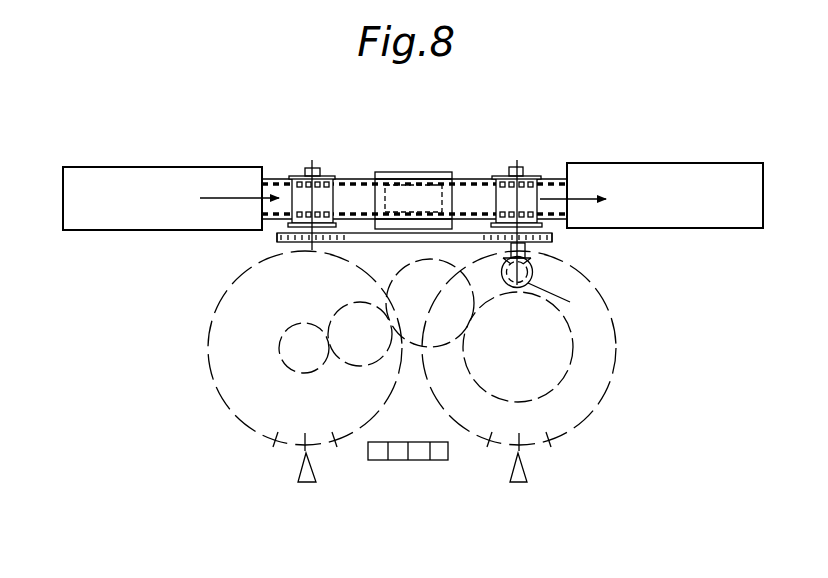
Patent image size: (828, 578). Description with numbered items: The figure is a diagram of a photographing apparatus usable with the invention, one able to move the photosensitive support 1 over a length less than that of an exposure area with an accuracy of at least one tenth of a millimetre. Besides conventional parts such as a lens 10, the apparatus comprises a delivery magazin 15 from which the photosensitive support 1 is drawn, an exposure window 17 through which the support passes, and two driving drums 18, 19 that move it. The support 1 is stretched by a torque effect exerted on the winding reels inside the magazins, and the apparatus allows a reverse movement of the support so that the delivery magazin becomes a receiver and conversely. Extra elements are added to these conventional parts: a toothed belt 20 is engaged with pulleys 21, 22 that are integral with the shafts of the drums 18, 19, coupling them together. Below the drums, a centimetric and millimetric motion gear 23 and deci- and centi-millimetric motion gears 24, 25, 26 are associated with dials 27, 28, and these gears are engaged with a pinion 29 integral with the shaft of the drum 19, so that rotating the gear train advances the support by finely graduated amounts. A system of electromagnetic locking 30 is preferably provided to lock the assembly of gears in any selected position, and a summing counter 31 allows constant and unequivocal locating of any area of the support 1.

The photosensitive support 1 is at (472, 192).
The lens 10 is at (651, 195).
The delivery magazin 15 is at (171, 198).
The exposure window 17 is at (397, 192).
The driving drum 18 is at (303, 196).
The driving drum 19 is at (527, 192).
The toothed belt 20 is at (405, 243).
The pulley 21 is at (277, 241).
The pulley 22 is at (553, 238).
The centimetric and millimetric motion gear 23 is at (571, 339).
The deci- and centi-millimetric motion gear 24 is at (433, 348).
The deci- and centi-millimetric motion gear 25 is at (370, 365).
The deci- and centi-millimetric motion gear 26 is at (286, 365).
The dial 27 is at (530, 450).
The dial 28 is at (299, 454).
The pinion 29 is at (532, 264).
The electromagnetic locking system 30 is at (504, 284).
The summing counter 31 is at (403, 461).